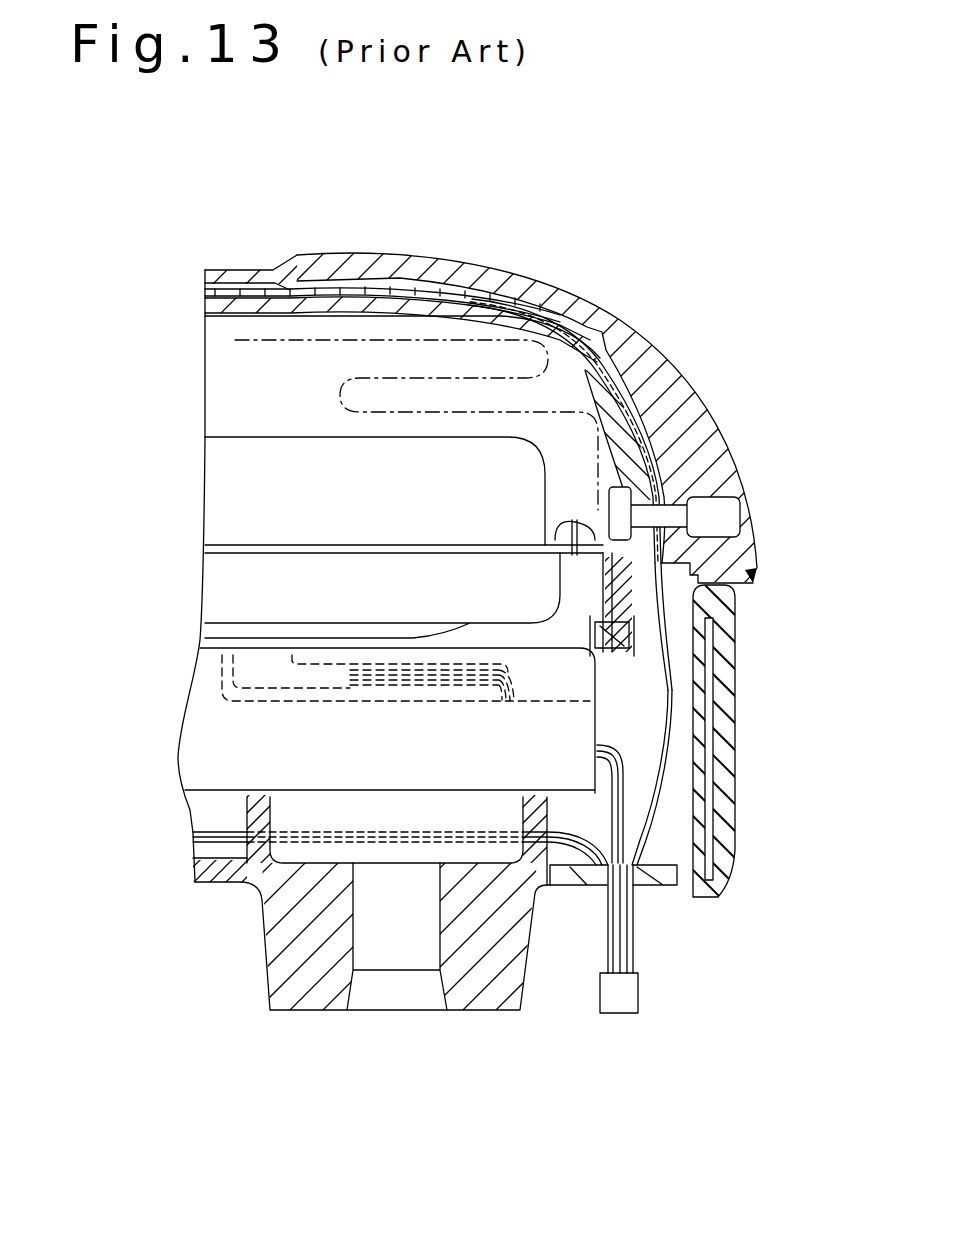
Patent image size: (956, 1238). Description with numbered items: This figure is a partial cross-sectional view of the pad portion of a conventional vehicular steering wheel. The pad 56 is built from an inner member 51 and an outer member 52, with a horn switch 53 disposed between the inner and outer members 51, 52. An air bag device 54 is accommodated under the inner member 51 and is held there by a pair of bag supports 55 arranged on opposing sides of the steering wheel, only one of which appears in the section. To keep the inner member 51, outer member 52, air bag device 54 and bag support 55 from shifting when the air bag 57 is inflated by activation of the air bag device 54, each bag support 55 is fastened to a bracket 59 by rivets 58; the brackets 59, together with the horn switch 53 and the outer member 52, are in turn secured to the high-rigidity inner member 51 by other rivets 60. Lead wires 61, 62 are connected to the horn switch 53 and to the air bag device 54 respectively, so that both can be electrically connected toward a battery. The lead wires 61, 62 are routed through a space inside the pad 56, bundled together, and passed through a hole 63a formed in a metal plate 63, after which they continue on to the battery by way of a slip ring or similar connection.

The inner member 51 is at (598, 387).
The outer member 52 is at (678, 381).
The horn switch 53 is at (380, 318).
The air bag device 54 is at (183, 578).
The bag support 55 is at (593, 555).
The pad 56 is at (437, 248).
The air bag 57 is at (338, 405).
The rivet 58 is at (620, 652).
The bracket 59 is at (643, 663).
The rivet 60 is at (690, 508).
The lead wire 61 is at (662, 797).
The lead wire 62 is at (616, 826).
The metal plate 63 is at (663, 887).
The hole 63a is at (603, 887).